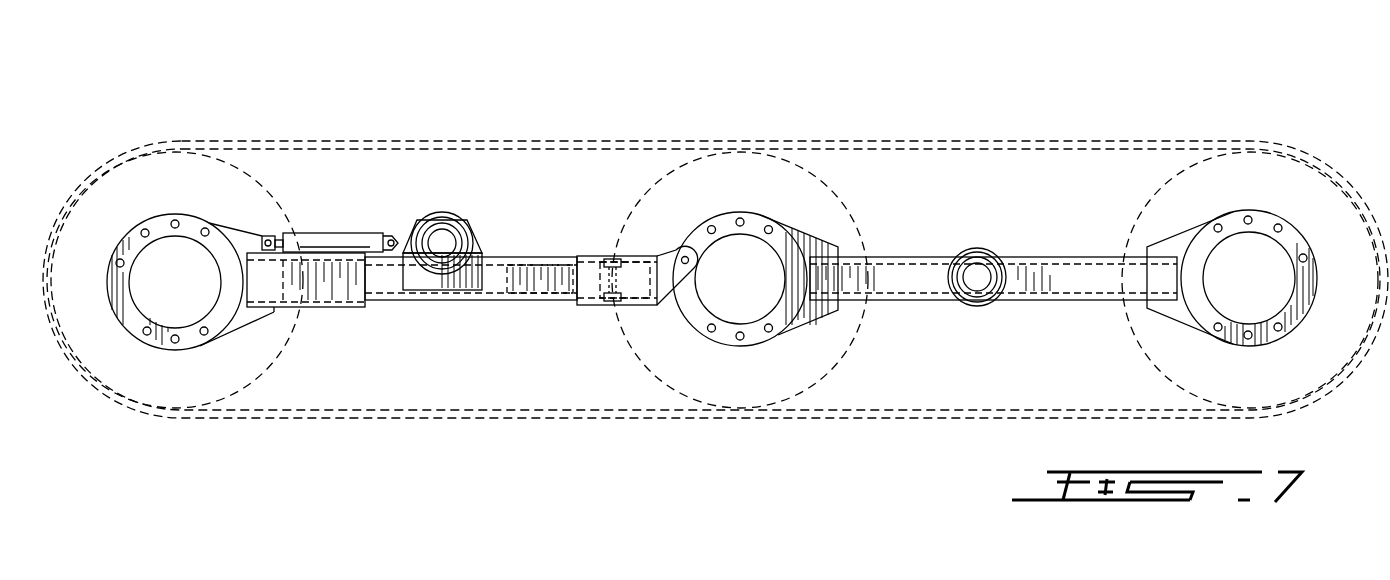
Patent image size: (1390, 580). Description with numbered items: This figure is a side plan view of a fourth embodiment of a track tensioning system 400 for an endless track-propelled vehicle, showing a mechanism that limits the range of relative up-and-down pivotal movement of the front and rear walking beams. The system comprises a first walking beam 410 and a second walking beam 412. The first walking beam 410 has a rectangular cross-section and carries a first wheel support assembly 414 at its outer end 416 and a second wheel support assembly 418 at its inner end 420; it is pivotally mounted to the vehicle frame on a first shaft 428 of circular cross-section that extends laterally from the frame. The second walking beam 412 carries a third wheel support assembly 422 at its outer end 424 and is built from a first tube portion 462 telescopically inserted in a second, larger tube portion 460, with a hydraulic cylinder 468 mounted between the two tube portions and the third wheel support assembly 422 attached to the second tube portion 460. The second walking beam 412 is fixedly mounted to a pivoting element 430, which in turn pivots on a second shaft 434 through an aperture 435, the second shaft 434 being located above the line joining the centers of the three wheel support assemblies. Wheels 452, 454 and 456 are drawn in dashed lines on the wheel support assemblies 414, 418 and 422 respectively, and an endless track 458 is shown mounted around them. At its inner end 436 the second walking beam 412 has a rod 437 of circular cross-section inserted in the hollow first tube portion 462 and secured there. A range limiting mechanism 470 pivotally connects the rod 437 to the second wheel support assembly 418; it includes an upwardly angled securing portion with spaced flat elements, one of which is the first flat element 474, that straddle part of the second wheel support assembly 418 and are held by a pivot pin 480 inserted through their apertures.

The track tensioning system 400 is at (337, 106).
The first walking beam 410 is at (935, 302).
The second walking beam 412 is at (522, 306).
The first wheel support assembly 414 is at (1207, 235).
The outer end 416 is at (1177, 273).
The second wheel support assembly 418 is at (793, 262).
The inner end 420 is at (808, 276).
The third wheel support assembly 422 is at (252, 238).
The outer end 424 is at (247, 276).
The first shaft 428 is at (980, 275).
The pivoting element 430 is at (470, 251).
The second shaft 434 is at (430, 218).
The aperture 435 is at (434, 240).
The inner end 436 is at (598, 242).
The rod 437 is at (570, 304).
The wheel 452 is at (1143, 197).
The wheel 454 is at (813, 167).
The wheel 456 is at (284, 353).
The endless track 458 is at (657, 418).
The second tube portion 460 is at (354, 308).
The first tube portion 462 is at (433, 302).
The hydraulic cylinder 468 is at (358, 233).
The range limiting mechanism 470 is at (598, 308).
The first flat element 474 is at (667, 262).
The pivot pin 480 is at (683, 250).